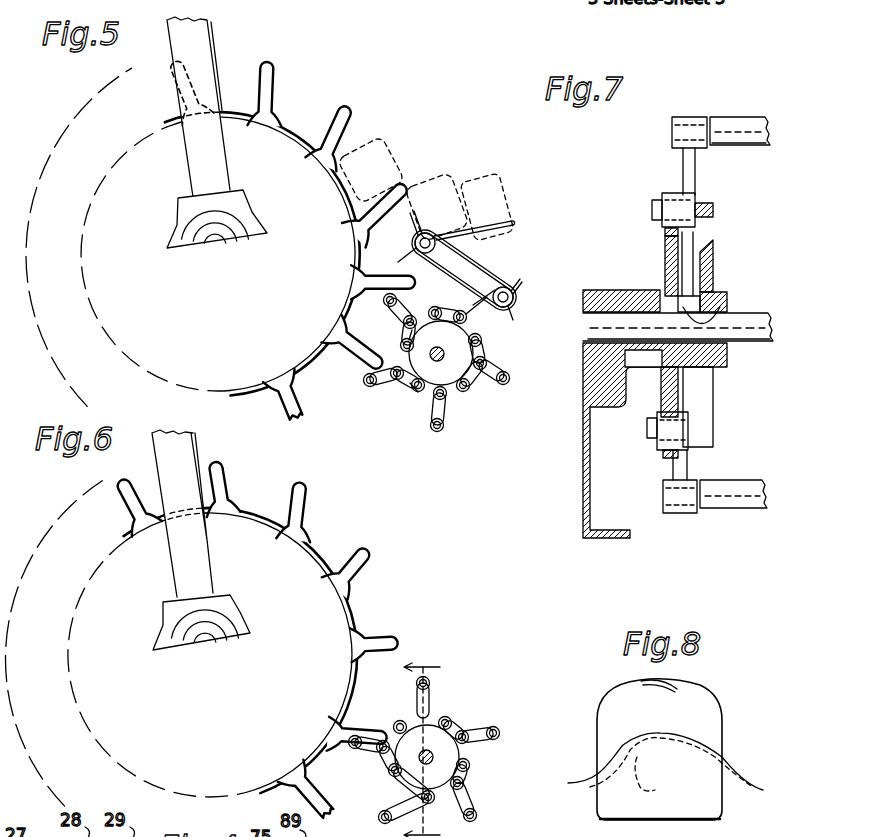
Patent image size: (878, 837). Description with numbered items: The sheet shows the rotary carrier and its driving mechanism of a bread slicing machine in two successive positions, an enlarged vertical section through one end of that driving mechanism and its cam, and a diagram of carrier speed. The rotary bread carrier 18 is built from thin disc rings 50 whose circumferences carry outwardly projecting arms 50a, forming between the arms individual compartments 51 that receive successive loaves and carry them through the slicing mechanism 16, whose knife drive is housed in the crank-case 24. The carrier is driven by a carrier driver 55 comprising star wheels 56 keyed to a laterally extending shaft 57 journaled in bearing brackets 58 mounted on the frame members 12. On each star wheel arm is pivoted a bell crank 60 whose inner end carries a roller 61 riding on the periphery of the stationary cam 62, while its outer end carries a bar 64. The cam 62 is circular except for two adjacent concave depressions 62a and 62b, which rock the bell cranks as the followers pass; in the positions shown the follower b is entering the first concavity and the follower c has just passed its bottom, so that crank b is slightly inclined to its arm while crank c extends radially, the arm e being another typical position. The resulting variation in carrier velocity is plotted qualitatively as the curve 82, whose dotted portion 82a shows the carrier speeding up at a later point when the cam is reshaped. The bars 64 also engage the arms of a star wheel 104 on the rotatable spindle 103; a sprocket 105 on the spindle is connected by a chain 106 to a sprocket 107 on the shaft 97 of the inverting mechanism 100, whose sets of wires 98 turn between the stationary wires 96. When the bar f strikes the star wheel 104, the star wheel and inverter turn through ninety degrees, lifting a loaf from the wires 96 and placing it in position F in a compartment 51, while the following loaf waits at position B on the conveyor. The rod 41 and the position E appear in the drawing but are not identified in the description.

In FIG. 7, the longitudinal horizontal frame member 12 is at (583, 470).
In FIG. 5, the slicing mechanism 16 is at (205, 132).
In FIG. 6, the slicing mechanism 16 is at (204, 540).
In FIG. 5, the rotary bread carrier 18 is at (300, 400).
In FIG. 6, the rotary bread carrier 18 is at (314, 772).
In FIG. 5, the crank-case 24 is at (253, 234).
In FIG. 6, the crank-case 24 is at (250, 626).
In FIG. 5, the rod 41 is at (198, 63).
In FIG. 6, the rod 41 is at (183, 455).
In FIG. 5, the disc ring 50 is at (249, 250).
In FIG. 6, the disc ring 50 is at (247, 642).
In FIG. 5, the outwardly projecting arm 50a is at (345, 125).
In FIG. 6, the outwardly projecting arm 50a is at (302, 503).
In FIG. 5, the compartment 51 is at (303, 100).
In FIG. 6, the compartment 51 is at (374, 615).
In FIG. 5, the carrier driver 55 is at (447, 379).
In FIG. 6, the carrier driver 55 is at (436, 747).
In FIG. 7, the carrier driver 55 is at (615, 187).
In FIG. 5, the star wheel 56 is at (478, 370).
In FIG. 6, the star wheel 56 is at (433, 712).
In FIG. 7, the star wheel 56 is at (713, 265).
In FIG. 5, the laterally extending shaft 57 is at (433, 362).
In FIG. 6, the laterally extending shaft 57 is at (450, 730).
In FIG. 7, the laterally extending shaft 57 is at (770, 314).
In FIG. 7, the bearing bracket 58 is at (593, 362).
In FIG. 5, the bell crank 60 is at (487, 378).
In FIG. 6, the bell crank 60 is at (470, 786).
In FIG. 7, the bell crank 60 is at (697, 182).
In FIG. 5, the cam follower roller 61 is at (485, 342).
In FIG. 6, the cam follower roller 61 is at (435, 750).
In FIG. 7, the cam follower roller 61 is at (667, 232).
In FIG. 5, the stationary cam 62 is at (441, 353).
In FIG. 6, the stationary cam 62 is at (445, 756).
In FIG. 7, the stationary cam 62 is at (665, 282).
In FIG. 5, the first concave depression 62a is at (407, 392).
In FIG. 6, the first concave depression 62a is at (410, 790).
In FIG. 5, the second concave depression 62b is at (402, 344).
In FIG. 6, the second concave depression 62b is at (397, 725).
In FIG. 5, the bar 64 is at (366, 384).
In FIG. 6, the bar 64 is at (355, 748).
In FIG. 7, the bar 64 is at (745, 124).
In FIG. 8, the carrier speed curve 82 is at (623, 745).
In FIG. 8, the dotted portion of curve 82a is at (661, 780).
In FIG. 5, the stationary pins or wires 96 is at (515, 228).
In FIG. 5, the inverter shaft 97 is at (447, 228).
In FIG. 5, the inverter pins or wires 98 is at (398, 254).
In FIG. 5, the inverting mechanism 100 is at (410, 246).
In FIG. 5, the rotatable spindle 103 is at (516, 296).
In FIG. 5, the star wheel 104 is at (514, 320).
In FIG. 5, the sprocket 105 is at (523, 281).
In FIG. 5, the chain 106 is at (465, 292).
In FIG. 5, the sprocket 107 is at (472, 258).
In FIG. 5, the star wheel arm position e is at (400, 318).
In FIG. 5, the bar f is at (478, 310).
In FIG. 5, the follower b is at (395, 385).
In FIG. 6, the follower c is at (380, 760).
In FIG. 5, the loaf position F is at (390, 157).
In FIG. 5, the card position E is at (443, 177).
In FIG. 5, the loaf position B is at (497, 173).